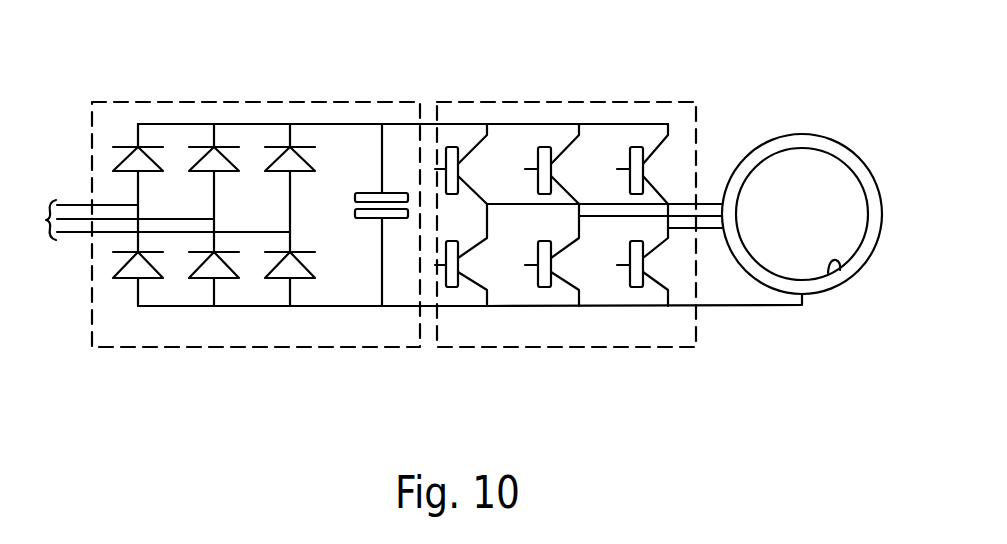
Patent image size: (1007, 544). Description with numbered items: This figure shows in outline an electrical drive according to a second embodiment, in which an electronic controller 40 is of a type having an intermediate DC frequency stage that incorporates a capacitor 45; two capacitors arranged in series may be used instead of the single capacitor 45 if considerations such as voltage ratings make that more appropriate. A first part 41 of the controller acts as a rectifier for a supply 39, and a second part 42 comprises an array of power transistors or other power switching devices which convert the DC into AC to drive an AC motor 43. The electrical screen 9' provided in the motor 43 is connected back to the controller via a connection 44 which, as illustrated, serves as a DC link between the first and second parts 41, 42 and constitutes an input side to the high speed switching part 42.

The supply 39 is at (50, 240).
The electronic controller 40 is at (522, 83).
The first part of the controller 41 is at (232, 348).
The second part of the controller 42 is at (450, 349).
The AC motor 43 is at (817, 135).
The connection 44 is at (518, 308).
The capacitor 45 is at (369, 220).
The electrical screen 9' is at (849, 306).